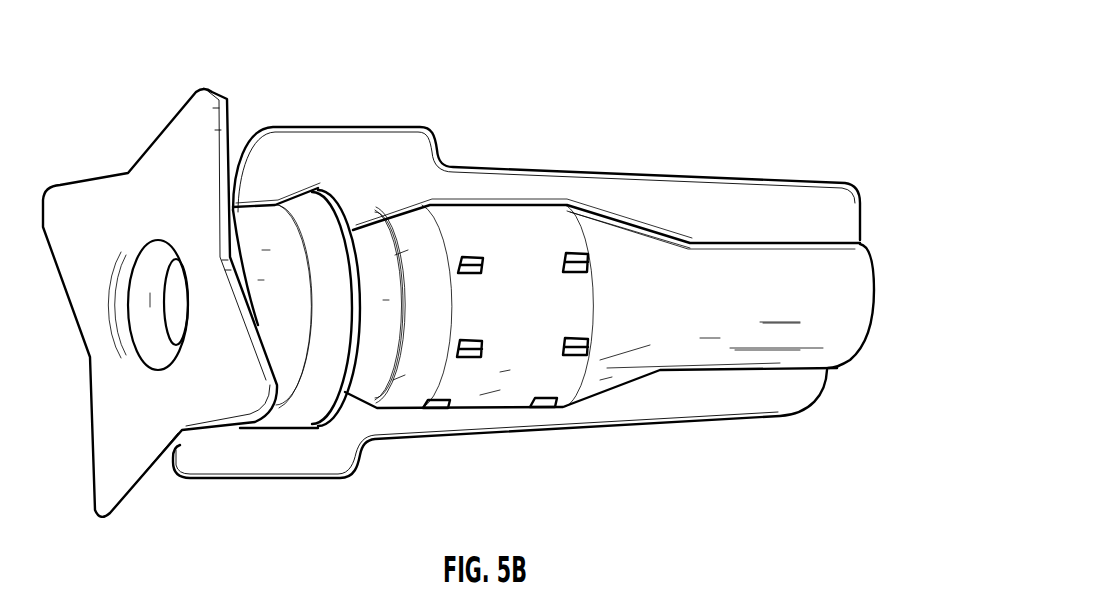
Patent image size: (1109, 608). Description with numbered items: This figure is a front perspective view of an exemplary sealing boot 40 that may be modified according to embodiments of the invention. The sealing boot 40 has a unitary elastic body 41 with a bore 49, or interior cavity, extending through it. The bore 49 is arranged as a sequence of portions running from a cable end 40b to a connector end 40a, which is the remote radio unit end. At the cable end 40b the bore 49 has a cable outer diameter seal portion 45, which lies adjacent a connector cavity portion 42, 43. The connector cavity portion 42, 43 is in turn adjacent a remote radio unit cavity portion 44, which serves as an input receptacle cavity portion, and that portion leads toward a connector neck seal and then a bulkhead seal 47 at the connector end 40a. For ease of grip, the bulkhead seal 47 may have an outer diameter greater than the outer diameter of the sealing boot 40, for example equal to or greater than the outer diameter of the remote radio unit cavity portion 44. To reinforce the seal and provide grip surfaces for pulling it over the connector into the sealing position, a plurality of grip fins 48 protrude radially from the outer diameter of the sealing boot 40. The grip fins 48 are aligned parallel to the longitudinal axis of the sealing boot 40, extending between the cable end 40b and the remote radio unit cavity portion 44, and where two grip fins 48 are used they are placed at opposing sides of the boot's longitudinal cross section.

The sealing boot 40 is at (675, 70).
The connector end 40a is at (62, 378).
The cable end 40b is at (883, 335).
The unitary elastic body 41 is at (494, 380).
The connector cavity portion 42 is at (623, 355).
The connector cavity portion 43 is at (373, 268).
The remote radio unit cavity portion 44 is at (295, 237).
The cable outer diameter seal portion 45 is at (810, 283).
The bulkhead seal 47 is at (122, 452).
The grip fins 48 is at (740, 210).
The bore 49 is at (150, 267).